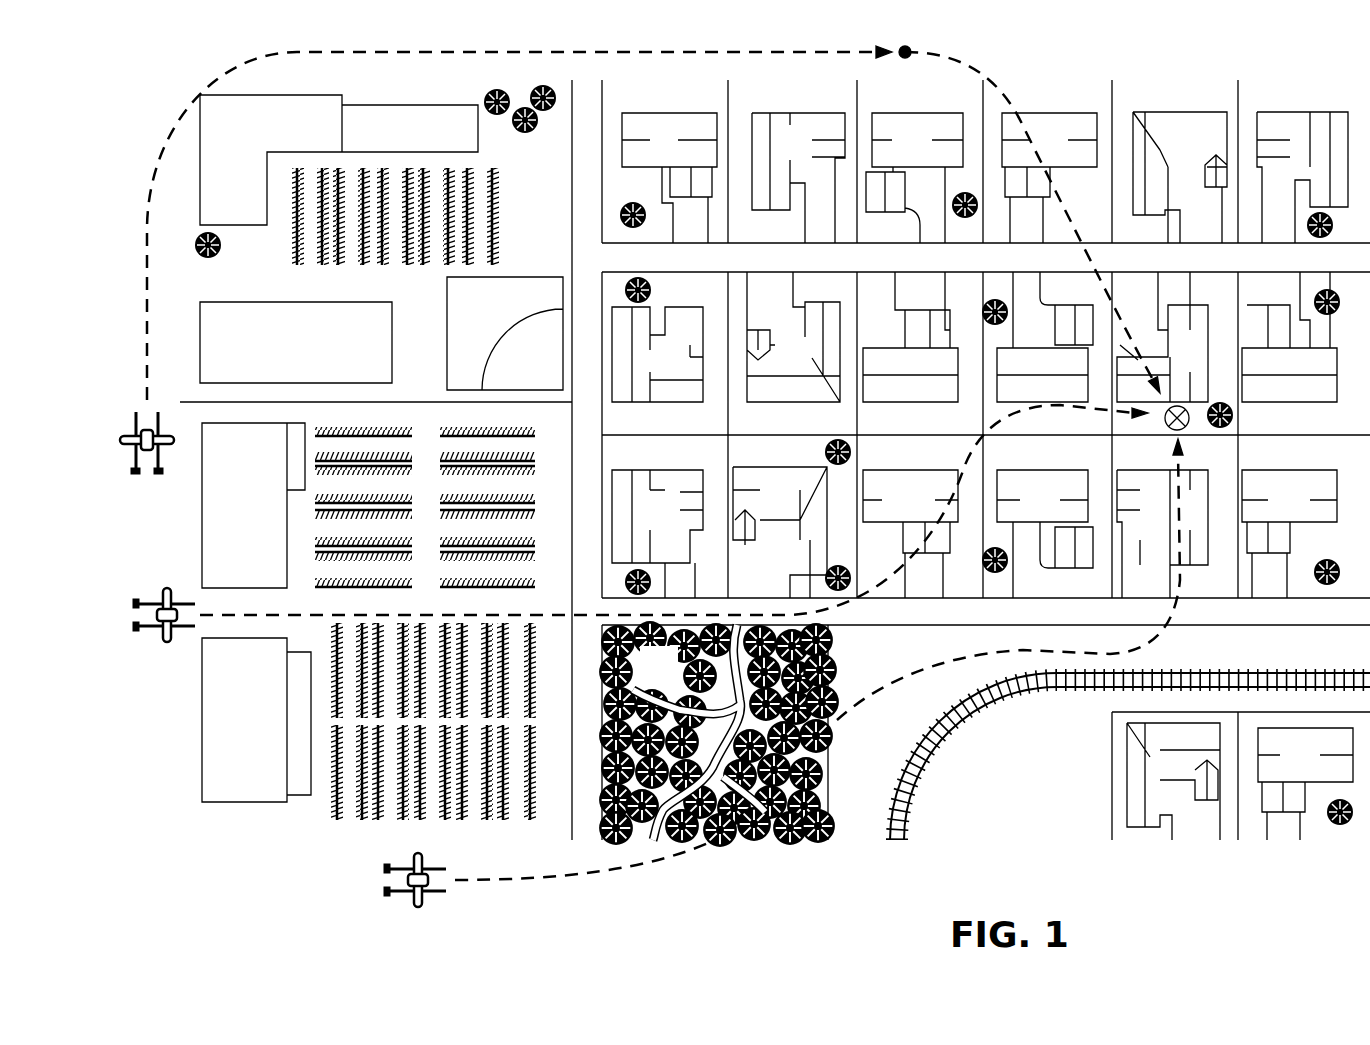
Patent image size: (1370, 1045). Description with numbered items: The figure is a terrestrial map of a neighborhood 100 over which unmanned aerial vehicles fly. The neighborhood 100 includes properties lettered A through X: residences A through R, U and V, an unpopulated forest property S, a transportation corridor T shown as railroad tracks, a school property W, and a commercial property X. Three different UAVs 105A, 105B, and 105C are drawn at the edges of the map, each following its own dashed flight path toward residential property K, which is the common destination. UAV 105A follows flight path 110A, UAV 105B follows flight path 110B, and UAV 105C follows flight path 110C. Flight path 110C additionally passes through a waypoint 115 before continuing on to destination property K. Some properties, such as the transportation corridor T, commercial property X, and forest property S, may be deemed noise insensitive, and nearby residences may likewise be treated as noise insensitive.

The neighborhood 100 is at (1259, 88).
The UAV 105A is at (385, 866).
The UAV 105B is at (166, 592).
The UAV 105C is at (140, 412).
The flight path 110A is at (863, 697).
The flight path 110B is at (997, 421).
The flight path 110C is at (150, 272).
The waypoint 115 is at (905, 58).